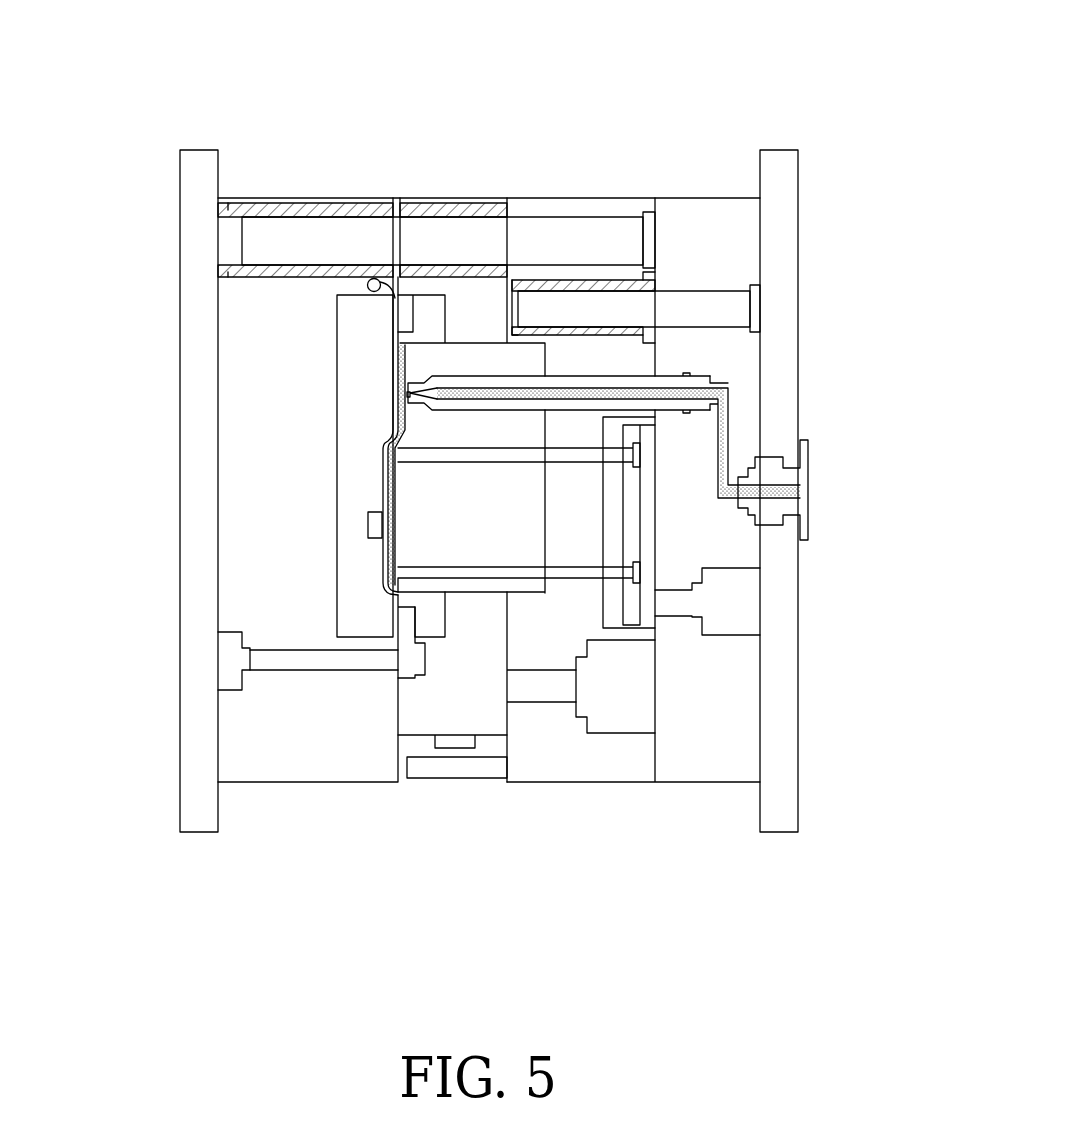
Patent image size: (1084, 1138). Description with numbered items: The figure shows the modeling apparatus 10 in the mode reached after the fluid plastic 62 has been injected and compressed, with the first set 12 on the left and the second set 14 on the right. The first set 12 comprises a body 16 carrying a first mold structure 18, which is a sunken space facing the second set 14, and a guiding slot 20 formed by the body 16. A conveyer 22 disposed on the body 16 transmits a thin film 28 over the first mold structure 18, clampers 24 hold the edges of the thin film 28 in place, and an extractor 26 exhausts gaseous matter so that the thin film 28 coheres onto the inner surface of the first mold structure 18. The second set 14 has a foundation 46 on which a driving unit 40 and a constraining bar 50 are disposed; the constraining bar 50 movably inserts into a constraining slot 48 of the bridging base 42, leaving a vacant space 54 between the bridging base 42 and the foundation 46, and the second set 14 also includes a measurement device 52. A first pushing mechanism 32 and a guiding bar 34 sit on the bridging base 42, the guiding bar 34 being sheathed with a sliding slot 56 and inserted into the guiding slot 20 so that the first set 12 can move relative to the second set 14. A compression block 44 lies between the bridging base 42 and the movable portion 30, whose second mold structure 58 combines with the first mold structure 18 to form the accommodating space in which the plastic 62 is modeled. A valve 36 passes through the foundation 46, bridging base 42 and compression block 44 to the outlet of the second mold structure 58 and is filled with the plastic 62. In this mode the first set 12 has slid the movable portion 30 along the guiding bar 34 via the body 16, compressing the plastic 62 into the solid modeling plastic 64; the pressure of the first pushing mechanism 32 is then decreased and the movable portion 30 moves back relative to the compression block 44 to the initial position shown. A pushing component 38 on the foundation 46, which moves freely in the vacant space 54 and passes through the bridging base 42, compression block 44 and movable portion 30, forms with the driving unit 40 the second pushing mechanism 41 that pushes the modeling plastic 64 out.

The modeling apparatus 10 is at (770, 54).
The first set 12 is at (178, 868).
The second set 14 is at (405, 868).
The body 16 is at (320, 770).
The first mold structure 18 is at (368, 337).
The guiding slot 20 is at (292, 212).
The conveyer 22 is at (372, 279).
The clamper 24 is at (405, 676).
The extractor 26 is at (366, 523).
The thin film 28 is at (380, 488).
The movable portion 30 is at (448, 722).
The first pushing mechanism 32 is at (633, 717).
The guiding bar 34 is at (573, 222).
The valve 36 is at (426, 382).
The pushing component 38 is at (583, 455).
The driving unit 40 is at (748, 600).
The second pushing mechanism 41 is at (848, 540).
The bridging base 42 is at (527, 768).
The compression block 44 is at (483, 527).
The foundation 46 is at (722, 770).
The constraining slot 48 is at (657, 285).
The constraining bar 50 is at (735, 300).
The measurement device 52 is at (492, 752).
The vacant space 54 is at (618, 622).
The sliding slot 56 is at (418, 217).
The second mold structure 58 is at (430, 632).
The plastic 62 is at (747, 421).
The modeling plastic 64 is at (400, 405).